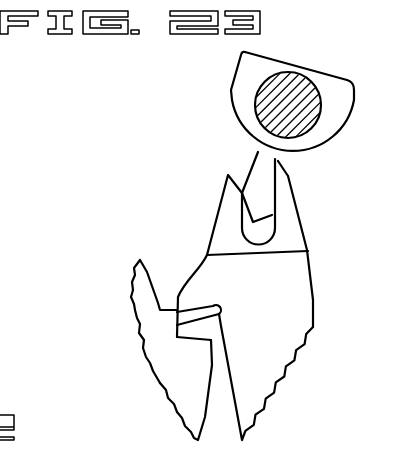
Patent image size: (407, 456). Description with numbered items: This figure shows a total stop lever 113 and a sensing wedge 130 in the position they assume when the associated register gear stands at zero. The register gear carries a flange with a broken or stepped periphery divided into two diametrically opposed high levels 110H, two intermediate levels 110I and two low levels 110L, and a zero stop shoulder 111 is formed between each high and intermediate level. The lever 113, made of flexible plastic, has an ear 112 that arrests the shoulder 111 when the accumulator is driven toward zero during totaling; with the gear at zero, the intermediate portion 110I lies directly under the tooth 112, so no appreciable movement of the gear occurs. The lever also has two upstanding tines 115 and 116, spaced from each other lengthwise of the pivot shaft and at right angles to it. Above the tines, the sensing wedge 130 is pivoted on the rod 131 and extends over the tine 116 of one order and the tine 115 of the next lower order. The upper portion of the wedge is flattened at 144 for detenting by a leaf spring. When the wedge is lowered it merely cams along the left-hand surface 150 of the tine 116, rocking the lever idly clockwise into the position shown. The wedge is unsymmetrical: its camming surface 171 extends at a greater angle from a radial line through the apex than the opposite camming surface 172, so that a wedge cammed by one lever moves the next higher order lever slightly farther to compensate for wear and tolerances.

The sensing wedge 130 is at (340, 122).
The rod 131 is at (290, 84).
The flattened portion 144 is at (335, 75).
The left-hand surface 150 is at (285, 176).
The tine 116 is at (298, 213).
The tine 115 is at (222, 222).
The camming surface 172 is at (242, 197).
The camming surface 171 is at (272, 215).
The total stop lever 113 is at (303, 292).
The ear 112 is at (213, 305).
The zero stop shoulder 111 is at (197, 338).
The low level 110L is at (152, 281).
The intermediate level 110I is at (177, 325).
The high level 110H is at (214, 363).